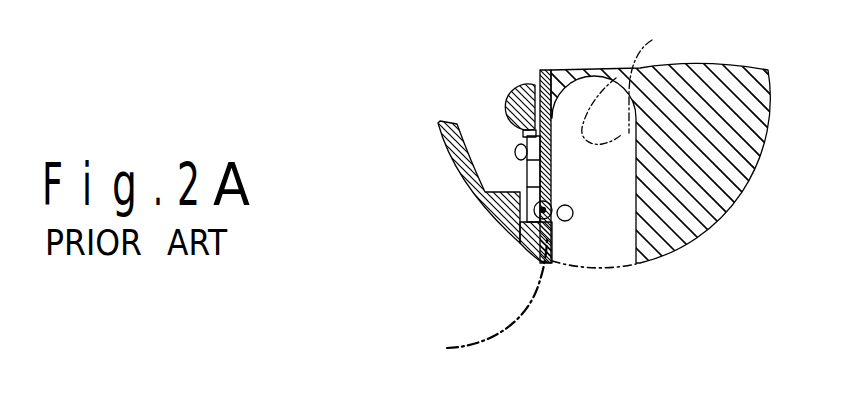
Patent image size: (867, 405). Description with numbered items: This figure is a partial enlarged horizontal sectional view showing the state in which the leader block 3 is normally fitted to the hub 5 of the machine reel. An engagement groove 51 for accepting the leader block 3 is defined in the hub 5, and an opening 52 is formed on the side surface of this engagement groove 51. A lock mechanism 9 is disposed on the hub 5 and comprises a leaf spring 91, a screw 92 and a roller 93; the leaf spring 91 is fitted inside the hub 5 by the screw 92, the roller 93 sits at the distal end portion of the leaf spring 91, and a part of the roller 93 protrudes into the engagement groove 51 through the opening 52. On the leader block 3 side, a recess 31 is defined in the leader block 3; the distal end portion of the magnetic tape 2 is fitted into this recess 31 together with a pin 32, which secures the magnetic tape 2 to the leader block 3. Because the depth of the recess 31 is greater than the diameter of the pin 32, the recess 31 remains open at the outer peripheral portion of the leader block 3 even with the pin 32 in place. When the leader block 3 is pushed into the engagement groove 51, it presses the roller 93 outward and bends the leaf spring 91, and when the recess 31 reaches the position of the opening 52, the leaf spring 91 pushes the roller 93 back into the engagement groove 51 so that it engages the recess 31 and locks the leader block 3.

The magnetic tape 2 is at (518, 318).
The leader block 3 is at (625, 79).
The hub 5 is at (727, 210).
The lock mechanism 9 is at (498, 123).
The recess 31 is at (555, 203).
The pin 32 is at (572, 219).
The engagement groove 51 is at (580, 69).
The opening 52 is at (490, 220).
The leaf spring 91 is at (527, 182).
The screw 92 is at (515, 152).
The roller 93 is at (520, 241).